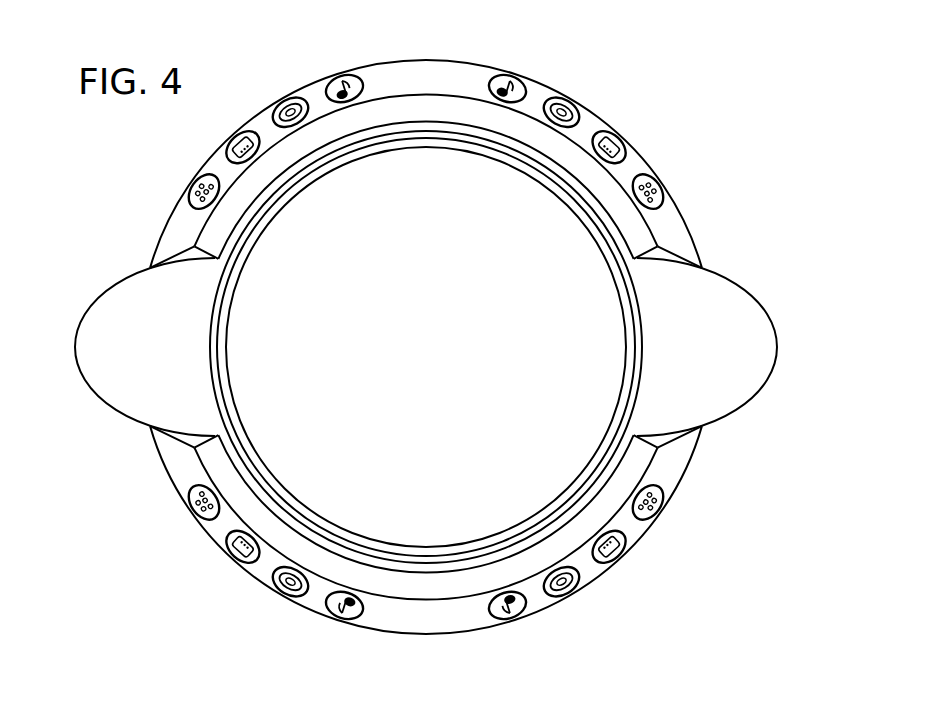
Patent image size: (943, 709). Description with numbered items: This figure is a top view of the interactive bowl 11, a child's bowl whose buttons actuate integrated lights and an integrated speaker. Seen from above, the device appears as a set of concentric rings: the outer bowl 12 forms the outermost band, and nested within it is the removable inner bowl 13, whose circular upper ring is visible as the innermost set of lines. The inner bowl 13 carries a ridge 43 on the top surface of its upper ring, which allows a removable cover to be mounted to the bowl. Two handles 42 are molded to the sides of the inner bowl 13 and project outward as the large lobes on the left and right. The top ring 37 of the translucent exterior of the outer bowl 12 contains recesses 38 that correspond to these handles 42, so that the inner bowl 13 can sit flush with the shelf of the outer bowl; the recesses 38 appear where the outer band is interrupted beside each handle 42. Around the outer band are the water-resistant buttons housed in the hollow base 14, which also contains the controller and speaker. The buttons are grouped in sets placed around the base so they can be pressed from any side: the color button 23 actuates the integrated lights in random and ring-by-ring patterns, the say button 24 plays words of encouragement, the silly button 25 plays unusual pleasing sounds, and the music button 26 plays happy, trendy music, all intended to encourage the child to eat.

The interactive bowl 11 is at (650, 119).
The outer bowl 12 is at (640, 475).
The removable inner bowl 13 is at (588, 262).
The hollow base 14 is at (178, 247).
The color button 23 is at (194, 512).
The say button 24 is at (239, 562).
The silly button 25 is at (291, 596).
The music button 26 is at (344, 620).
The top ring 37 is at (208, 463).
The recesses 38 is at (657, 256).
The handles 42 is at (763, 347).
The ridge 43 is at (634, 313).